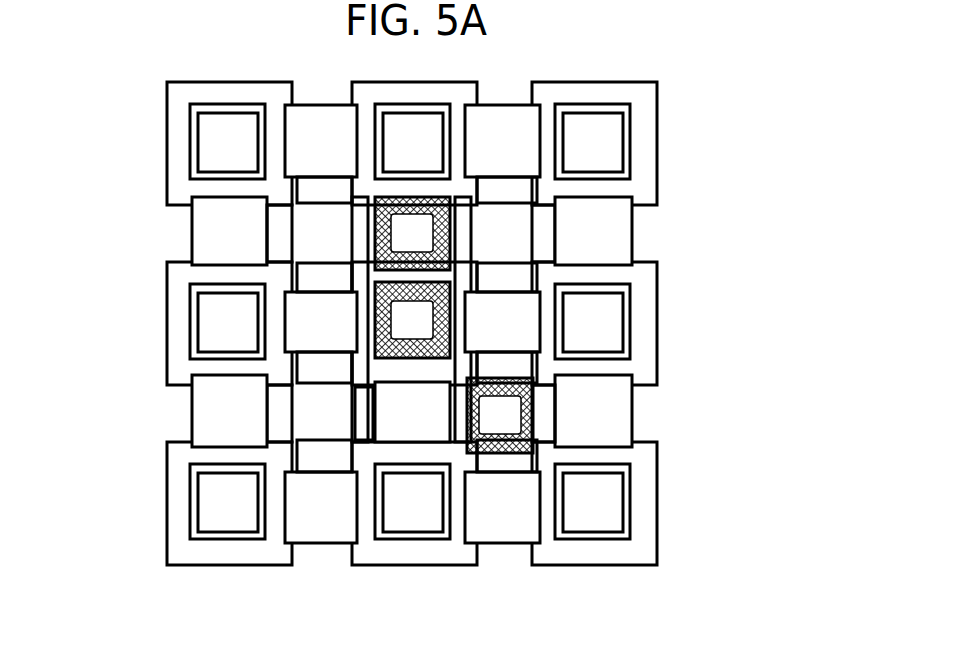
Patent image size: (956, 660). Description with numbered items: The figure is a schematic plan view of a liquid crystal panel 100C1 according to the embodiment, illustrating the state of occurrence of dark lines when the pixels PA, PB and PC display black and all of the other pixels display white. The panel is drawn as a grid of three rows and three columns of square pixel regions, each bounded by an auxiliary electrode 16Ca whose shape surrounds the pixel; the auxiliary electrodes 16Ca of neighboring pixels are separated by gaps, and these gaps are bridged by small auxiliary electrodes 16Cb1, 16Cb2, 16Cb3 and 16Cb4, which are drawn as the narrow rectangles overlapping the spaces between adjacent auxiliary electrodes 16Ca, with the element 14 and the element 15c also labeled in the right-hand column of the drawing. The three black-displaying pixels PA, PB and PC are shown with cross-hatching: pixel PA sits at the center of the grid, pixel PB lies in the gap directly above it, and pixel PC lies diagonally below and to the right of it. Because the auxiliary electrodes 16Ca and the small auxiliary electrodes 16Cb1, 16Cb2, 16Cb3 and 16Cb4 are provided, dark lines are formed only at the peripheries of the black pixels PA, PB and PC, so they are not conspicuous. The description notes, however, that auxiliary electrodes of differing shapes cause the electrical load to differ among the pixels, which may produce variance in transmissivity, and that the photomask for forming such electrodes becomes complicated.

The liquid crystal panel 100C1 is at (702, 105).
The wiring line 14 is at (632, 242).
The auxiliary electrode 16Ca is at (657, 288).
The inner electrode 15c is at (565, 352).
The small auxiliary electrode 16Cb1 is at (318, 350).
The small auxiliary electrode 16Cb2 is at (260, 412).
The small auxiliary electrode 16Cb3 is at (318, 472).
The small auxiliary electrode 16Cb4 is at (380, 398).
The pixel PA is at (423, 339).
The pixel PB is at (423, 252).
The pixel PC is at (512, 434).